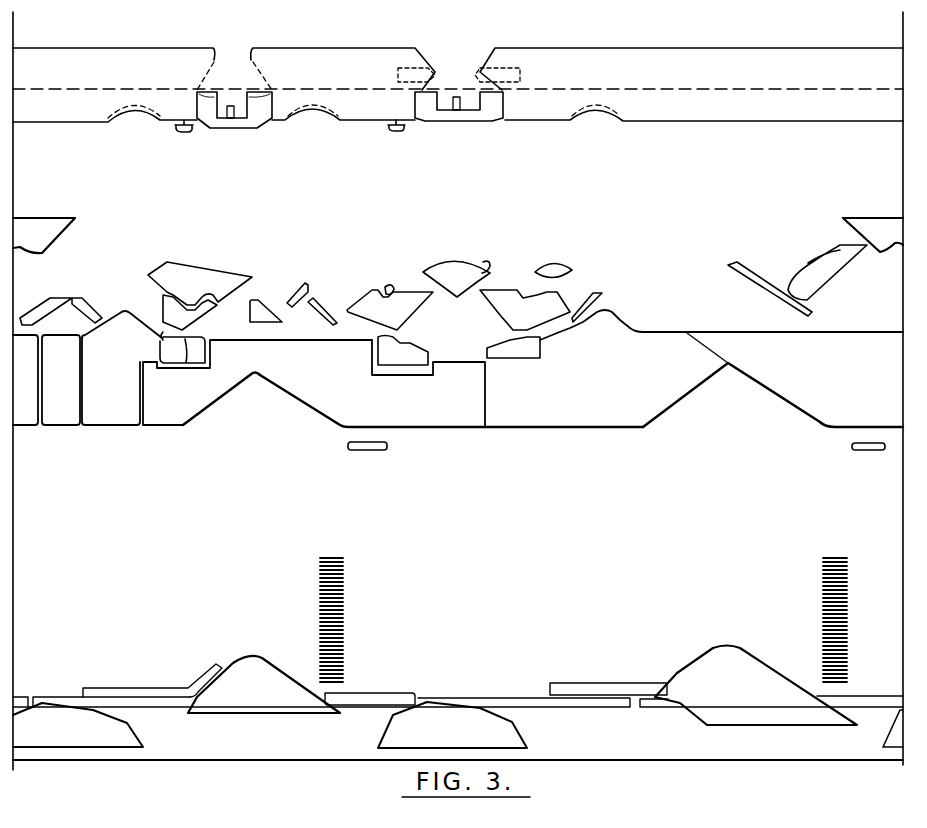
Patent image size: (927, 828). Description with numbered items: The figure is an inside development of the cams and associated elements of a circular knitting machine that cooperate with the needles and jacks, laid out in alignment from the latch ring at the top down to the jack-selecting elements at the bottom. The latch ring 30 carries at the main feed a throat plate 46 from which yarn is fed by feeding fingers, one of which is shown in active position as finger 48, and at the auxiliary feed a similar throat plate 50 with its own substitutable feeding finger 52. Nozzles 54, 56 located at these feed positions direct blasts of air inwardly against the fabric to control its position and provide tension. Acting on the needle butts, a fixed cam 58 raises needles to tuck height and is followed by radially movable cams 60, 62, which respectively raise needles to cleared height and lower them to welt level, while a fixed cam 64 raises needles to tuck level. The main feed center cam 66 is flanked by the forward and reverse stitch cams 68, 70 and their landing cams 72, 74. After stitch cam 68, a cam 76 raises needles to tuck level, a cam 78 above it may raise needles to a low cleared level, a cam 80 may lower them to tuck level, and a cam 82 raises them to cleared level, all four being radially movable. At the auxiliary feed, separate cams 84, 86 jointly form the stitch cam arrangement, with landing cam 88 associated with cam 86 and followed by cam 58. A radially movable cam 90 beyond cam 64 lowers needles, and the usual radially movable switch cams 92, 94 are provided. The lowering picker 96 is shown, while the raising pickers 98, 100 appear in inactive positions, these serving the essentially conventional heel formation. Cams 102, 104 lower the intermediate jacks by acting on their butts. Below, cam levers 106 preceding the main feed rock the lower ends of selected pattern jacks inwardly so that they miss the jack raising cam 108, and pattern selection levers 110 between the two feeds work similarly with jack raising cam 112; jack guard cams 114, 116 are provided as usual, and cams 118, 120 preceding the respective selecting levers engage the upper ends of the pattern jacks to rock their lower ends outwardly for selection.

The latch ring 30 is at (755, 57).
The throat plate 46 is at (467, 109).
The yarn feeding finger 48 is at (455, 97).
The throat plate 50 is at (242, 117).
The yarn feeding finger 52 is at (229, 105).
The nozzle 54 is at (394, 132).
The nozzle 56 is at (181, 133).
The fixed cam 58 is at (160, 337).
The radially movable cam 60 is at (93, 313).
The radially movable cam 62 is at (42, 310).
The fixed cam 64 is at (615, 313).
The main feed center cam 66 is at (468, 272).
The forward stitch cam 68 is at (407, 308).
The reverse stitch cam 70 is at (513, 300).
The landing cam 72 is at (407, 342).
The landing cam 74 is at (512, 339).
The cam 76 is at (320, 333).
The cam 78 is at (326, 308).
The cam 80 is at (293, 297).
The cam 82 is at (267, 308).
The stitch cam 84 is at (235, 283).
The stitch cam 86 is at (200, 315).
The landing cam 88 is at (186, 355).
The radially movable cam 90 is at (583, 305).
The switch cam 92 is at (830, 273).
The switch cam 94 is at (755, 273).
The lowering picker 96 is at (893, 260).
The raising picker 98 is at (390, 286).
The raising picker 100 is at (492, 262).
The cam 102 is at (677, 400).
The cam 104 is at (222, 396).
The cam levers 106 is at (848, 610).
The jack raising cam 108 is at (762, 660).
The pattern selection levers 110 is at (340, 610).
The jack raising cam 112 is at (257, 670).
The jack guard cam 114 is at (620, 684).
The jack guard cam 116 is at (120, 688).
The cam 118 is at (858, 452).
The cam 120 is at (365, 452).